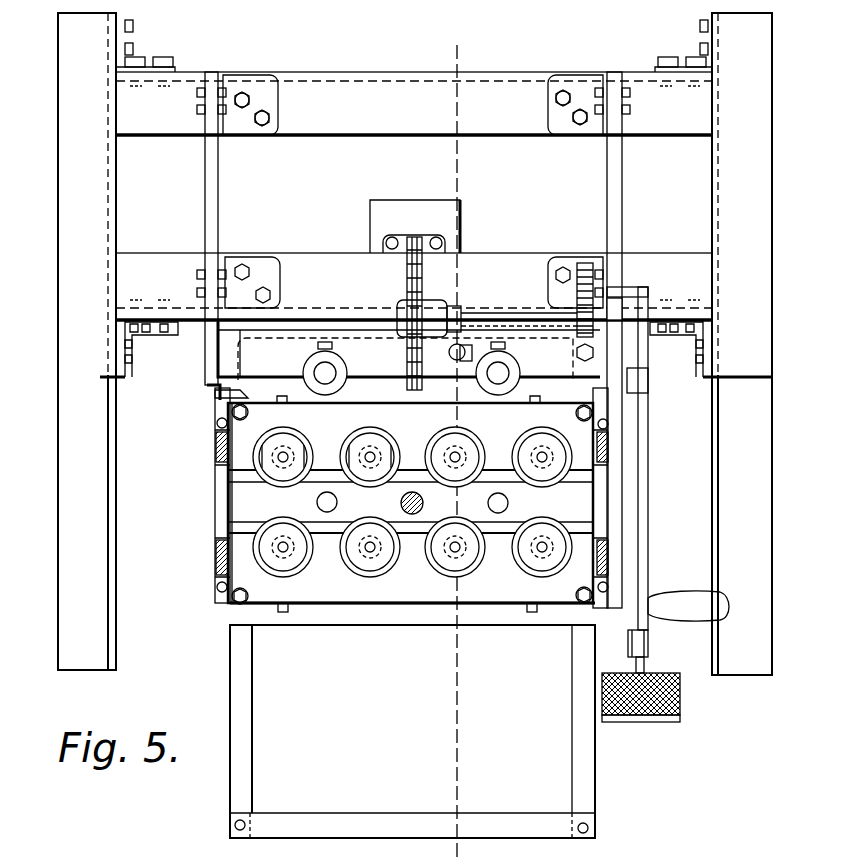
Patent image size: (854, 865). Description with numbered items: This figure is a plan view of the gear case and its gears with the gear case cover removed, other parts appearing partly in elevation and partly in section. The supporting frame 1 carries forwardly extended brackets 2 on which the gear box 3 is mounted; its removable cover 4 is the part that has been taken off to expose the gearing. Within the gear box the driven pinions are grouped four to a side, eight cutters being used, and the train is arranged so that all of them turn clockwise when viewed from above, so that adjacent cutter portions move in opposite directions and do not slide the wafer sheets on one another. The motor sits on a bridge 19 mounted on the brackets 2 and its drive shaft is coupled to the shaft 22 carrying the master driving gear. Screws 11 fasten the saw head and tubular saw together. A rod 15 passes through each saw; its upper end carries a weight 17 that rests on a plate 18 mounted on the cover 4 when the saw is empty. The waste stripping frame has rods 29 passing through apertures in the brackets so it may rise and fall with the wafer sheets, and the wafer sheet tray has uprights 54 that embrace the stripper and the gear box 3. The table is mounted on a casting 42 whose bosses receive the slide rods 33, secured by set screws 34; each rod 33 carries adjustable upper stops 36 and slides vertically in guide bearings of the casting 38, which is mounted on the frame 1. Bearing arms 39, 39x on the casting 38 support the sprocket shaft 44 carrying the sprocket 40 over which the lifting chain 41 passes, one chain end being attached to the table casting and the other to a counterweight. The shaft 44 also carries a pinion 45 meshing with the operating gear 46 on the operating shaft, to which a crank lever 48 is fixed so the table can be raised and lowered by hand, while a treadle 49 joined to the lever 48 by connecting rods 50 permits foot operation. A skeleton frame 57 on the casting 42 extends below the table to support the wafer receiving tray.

The supporting frame 1 is at (768, 157).
The brackets 2 is at (226, 522).
The gear box 3 is at (413, 606).
The removable cover 4 is at (245, 496).
The screws 11 is at (311, 455).
The rod 15 is at (298, 448).
The weight 17 is at (372, 443).
The plate 18 is at (412, 492).
The bridge 19 is at (216, 555).
The shaft 22 is at (457, 445).
The rods 29 is at (222, 424).
The slide rods 33 is at (327, 372).
The set screws 34 is at (532, 612).
The uprights 54 is at (282, 613).
The upper stops 36 is at (348, 375).
The casting 38 is at (295, 340).
The bearing arm 39 is at (458, 322).
The bearing arm 39x is at (615, 310).
The sprocket 40 is at (430, 312).
The lifting chain 41 is at (423, 268).
The casting 42 is at (250, 397).
The sprocket shaft 44 is at (490, 305).
The pinion 45 is at (650, 304).
The operating gear 46 is at (585, 264).
The crank lever 48 is at (640, 490).
The treadle 49 is at (681, 712).
The connecting rods 50 is at (650, 640).
The skeleton frame 57 is at (240, 762).